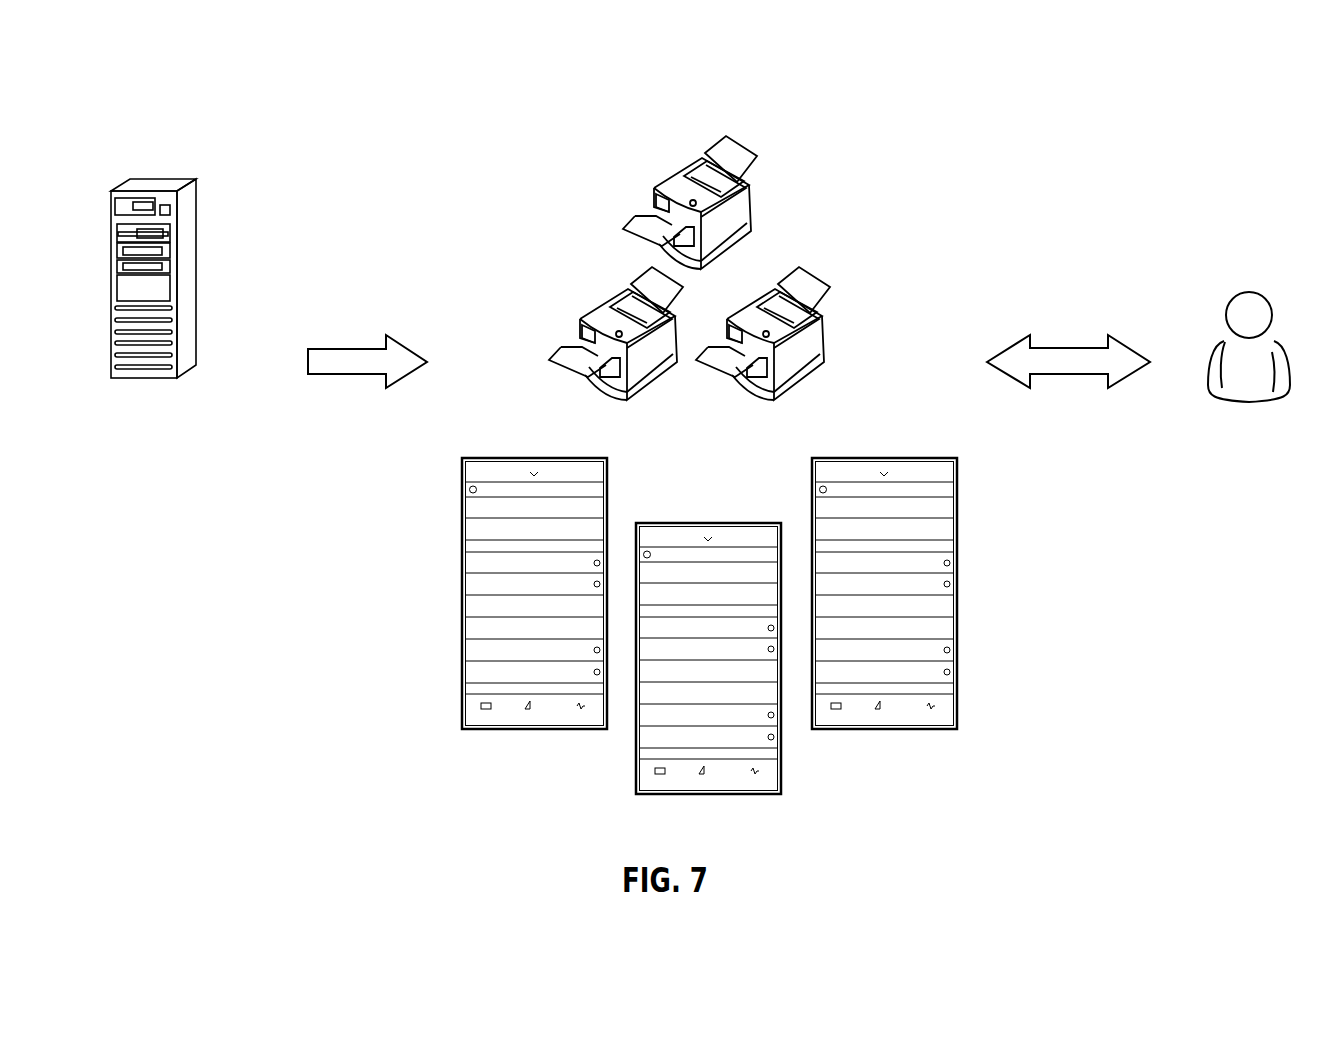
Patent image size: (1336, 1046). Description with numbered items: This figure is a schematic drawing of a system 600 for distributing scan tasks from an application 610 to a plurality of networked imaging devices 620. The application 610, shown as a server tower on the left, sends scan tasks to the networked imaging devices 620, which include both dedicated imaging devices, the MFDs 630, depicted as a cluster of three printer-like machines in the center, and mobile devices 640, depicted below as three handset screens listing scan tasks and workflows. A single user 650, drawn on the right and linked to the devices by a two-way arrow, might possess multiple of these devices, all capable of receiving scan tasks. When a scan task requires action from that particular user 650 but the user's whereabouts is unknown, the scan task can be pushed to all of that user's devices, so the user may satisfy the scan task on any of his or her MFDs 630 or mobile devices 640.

The document processing system 600 is at (1098, 73).
The application 610 is at (165, 178).
The networked imaging devices 620 is at (550, 118).
The MFDs 630 is at (605, 263).
The mobile devices 640 is at (860, 800).
The user 650 is at (1249, 292).